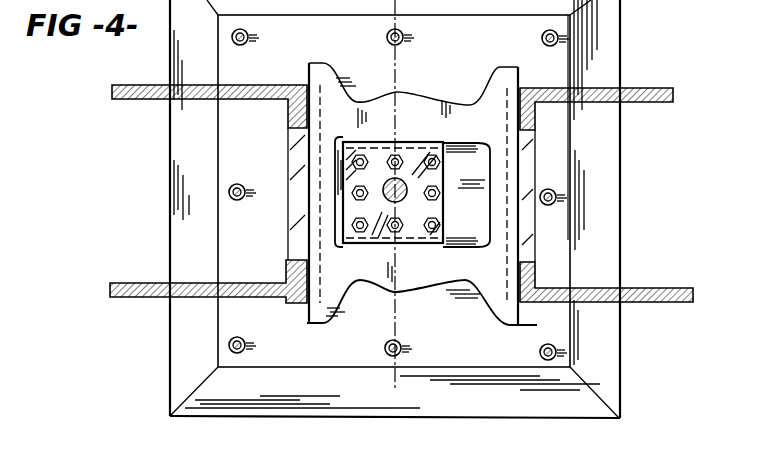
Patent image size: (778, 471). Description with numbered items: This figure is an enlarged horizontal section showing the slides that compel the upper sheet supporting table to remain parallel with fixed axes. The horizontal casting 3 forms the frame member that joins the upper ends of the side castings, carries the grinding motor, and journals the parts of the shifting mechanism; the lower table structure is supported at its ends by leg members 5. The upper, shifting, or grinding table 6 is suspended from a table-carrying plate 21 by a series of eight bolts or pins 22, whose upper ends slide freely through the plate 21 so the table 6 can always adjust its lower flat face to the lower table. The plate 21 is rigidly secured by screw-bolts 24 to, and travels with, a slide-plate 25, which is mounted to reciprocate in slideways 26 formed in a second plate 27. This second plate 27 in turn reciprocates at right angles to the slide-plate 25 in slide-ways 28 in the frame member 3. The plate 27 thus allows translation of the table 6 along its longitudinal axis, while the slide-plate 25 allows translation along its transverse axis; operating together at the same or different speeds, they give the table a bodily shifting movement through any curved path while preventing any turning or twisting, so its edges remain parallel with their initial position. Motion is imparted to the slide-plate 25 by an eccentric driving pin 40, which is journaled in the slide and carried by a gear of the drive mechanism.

The horizontal casting 3 is at (643, 303).
The leg members 5 is at (395, 388).
The grinding table 6 is at (605, 222).
The table-carrying plate 21 is at (394, 191).
The bolts or pins 22 is at (250, 37).
The screw-bolts 24 is at (446, 163).
The slide-plate 25 is at (435, 181).
The slideways 26 is at (456, 143).
The second plate 27 is at (418, 280).
The slide-ways 28 is at (302, 160).
The eccentric driving pin 40 is at (405, 197).